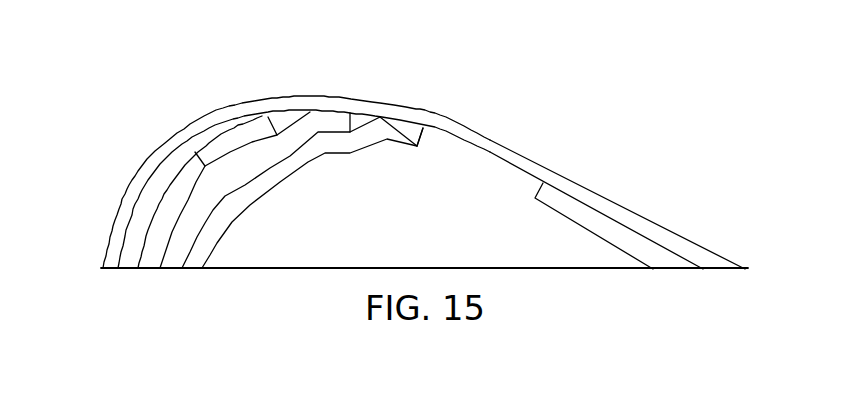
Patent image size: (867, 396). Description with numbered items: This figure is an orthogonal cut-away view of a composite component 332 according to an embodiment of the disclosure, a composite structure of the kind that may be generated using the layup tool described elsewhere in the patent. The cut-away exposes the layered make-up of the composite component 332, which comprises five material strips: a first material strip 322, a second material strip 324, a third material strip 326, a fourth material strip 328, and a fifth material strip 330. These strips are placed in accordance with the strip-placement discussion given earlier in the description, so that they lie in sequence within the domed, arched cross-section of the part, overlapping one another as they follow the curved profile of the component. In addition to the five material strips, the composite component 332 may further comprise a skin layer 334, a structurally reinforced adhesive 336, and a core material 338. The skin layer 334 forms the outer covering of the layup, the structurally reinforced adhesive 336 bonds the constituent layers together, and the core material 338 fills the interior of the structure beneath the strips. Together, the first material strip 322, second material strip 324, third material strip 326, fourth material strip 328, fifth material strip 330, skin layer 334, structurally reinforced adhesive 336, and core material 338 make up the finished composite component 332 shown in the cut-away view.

The first material strip 322 is at (404, 130).
The second material strip 324 is at (327, 119).
The third material strip 326 is at (253, 128).
The fourth material strip 328 is at (147, 214).
The fifth material strip 330 is at (622, 236).
The composite component 332 is at (130, 145).
The skin layer 334 is at (464, 134).
The structurally reinforced adhesive 336 is at (263, 270).
The core material 338 is at (508, 168).